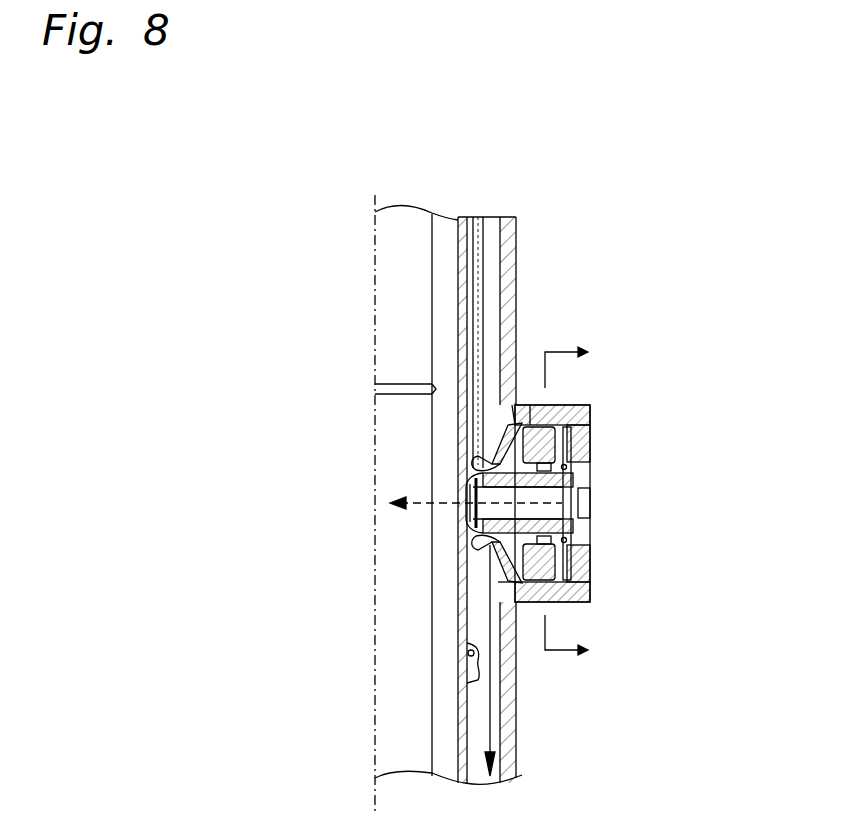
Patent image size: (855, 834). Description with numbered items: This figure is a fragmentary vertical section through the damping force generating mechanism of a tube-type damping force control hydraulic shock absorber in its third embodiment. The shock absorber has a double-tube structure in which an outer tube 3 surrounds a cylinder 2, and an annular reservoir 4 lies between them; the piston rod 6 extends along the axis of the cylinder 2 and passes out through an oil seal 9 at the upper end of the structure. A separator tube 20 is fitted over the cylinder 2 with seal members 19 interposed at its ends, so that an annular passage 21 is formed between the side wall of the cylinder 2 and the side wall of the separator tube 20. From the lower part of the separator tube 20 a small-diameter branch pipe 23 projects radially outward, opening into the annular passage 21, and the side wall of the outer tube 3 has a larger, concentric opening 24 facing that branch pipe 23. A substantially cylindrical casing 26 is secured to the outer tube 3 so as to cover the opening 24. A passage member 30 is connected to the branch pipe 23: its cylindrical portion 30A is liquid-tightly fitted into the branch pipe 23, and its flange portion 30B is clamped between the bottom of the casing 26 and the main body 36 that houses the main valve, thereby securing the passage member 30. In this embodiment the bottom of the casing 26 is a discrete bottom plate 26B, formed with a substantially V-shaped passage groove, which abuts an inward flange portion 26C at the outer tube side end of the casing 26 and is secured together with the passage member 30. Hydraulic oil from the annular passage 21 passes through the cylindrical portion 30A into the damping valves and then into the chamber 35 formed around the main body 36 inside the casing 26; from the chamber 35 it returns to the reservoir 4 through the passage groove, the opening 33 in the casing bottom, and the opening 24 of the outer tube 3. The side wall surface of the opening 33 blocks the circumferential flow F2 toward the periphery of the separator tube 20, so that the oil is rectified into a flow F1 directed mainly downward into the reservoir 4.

The cylinder 2 is at (462, 215).
The annular passage 21 is at (469, 215).
The separator tube 20 is at (478, 215).
The reservoir 4 is at (492, 215).
The outer tube 3 is at (508, 215).
The piston rod 6 is at (413, 285).
The casing 26 is at (590, 408).
The bottom plate 26B is at (530, 405).
The inward flange portion 26C is at (518, 400).
The chamber 35 is at (592, 428).
The main body 36 is at (592, 553).
The opening 33 is at (592, 505).
The passage member 30 is at (470, 545).
The cylindrical portion 30A is at (470, 509).
The flange portion 30B is at (548, 422).
The opening 24 is at (495, 450).
The branch pipe 23 is at (470, 483).
The seal member 19 is at (473, 645).
The oil seal 9 is at (576, 504).
The flow directed mainly downward F1 is at (490, 707).
The circumferential flow F2 is at (452, 501).